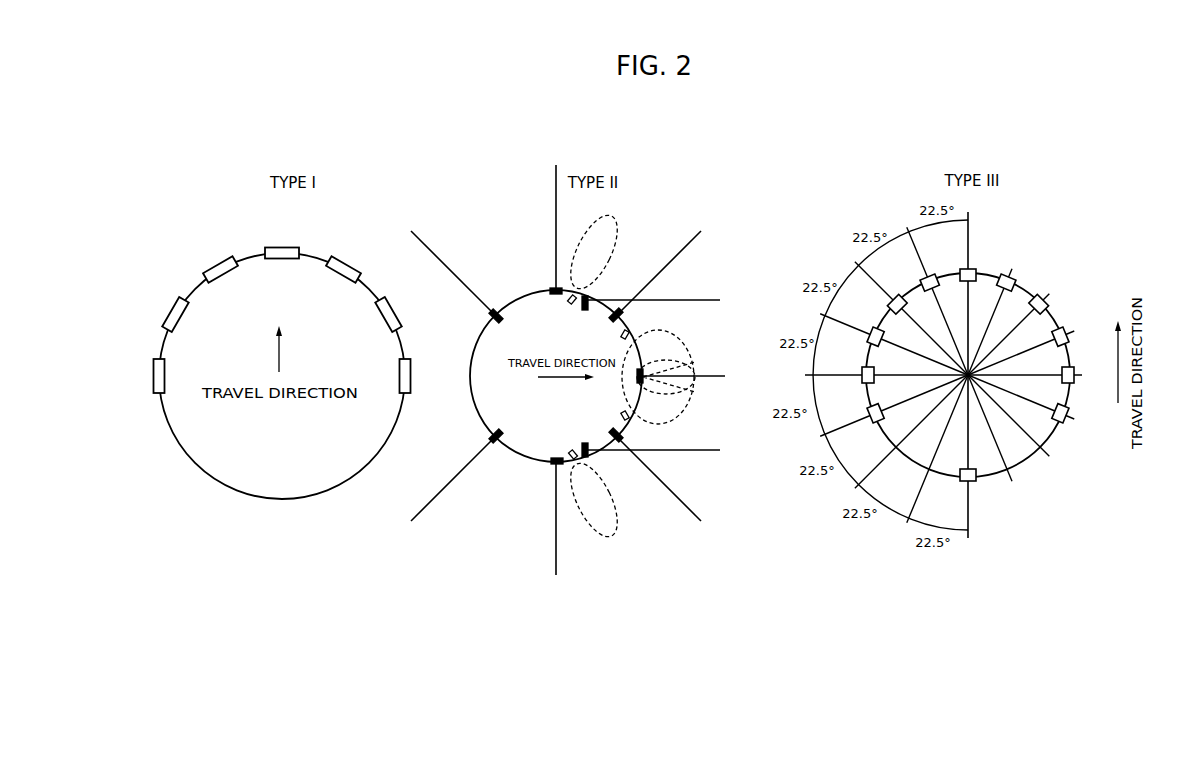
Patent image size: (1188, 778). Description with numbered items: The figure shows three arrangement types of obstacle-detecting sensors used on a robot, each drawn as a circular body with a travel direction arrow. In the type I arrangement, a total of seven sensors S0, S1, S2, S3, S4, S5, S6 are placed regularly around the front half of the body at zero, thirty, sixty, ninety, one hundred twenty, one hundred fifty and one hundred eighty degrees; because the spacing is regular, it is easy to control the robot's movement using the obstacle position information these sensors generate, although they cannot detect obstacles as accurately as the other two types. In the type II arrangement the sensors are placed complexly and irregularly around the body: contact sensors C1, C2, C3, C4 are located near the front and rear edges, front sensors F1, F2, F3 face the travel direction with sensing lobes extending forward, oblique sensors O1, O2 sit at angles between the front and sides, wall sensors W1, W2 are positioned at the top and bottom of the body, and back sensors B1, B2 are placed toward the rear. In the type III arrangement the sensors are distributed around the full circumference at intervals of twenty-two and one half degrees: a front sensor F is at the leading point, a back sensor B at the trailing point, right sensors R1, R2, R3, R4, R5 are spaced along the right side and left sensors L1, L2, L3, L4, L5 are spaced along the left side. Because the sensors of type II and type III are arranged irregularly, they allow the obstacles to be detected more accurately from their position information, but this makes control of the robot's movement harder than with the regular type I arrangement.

The sensor S0 (type I) S0 is at (392, 376).
The sensor S1 (type I) S1 is at (379, 318).
The sensor S2 (type I) S2 is at (342, 280).
The sensor S3 (type I) S3 is at (282, 270).
The sensor S4 (type I) S4 is at (221, 281).
The sensor S5 (type I) S5 is at (181, 321).
The sensor S6 (type I) S6 is at (170, 377).
The wall sensor W1 is at (552, 453).
The wall sensor W2 is at (551, 299).
The contact sensor C1 is at (571, 448).
The contact sensor C2 is at (624, 408).
The contact sensor C3 is at (625, 343).
The contact sensor C4 is at (571, 306).
The front sensor F1 is at (590, 443).
The front sensor F2 is at (632, 376).
The front sensor F3 is at (589, 308).
The oblique sensor O1 is at (611, 430).
The oblique sensor O2 is at (611, 319).
The back sensor B1 is at (504, 431).
The back sensor B2 is at (504, 321).
The front sensor F is at (972, 265).
The back sensor B is at (962, 486).
The right sensor R1 is at (1007, 270).
The right sensor R2 is at (1052, 298).
The right sensor R3 is at (1074, 332).
The right sensor R4 is at (1083, 375).
The right sensor R5 is at (1074, 414).
The left sensor L1 is at (933, 270).
The left sensor L2 is at (897, 292).
The left sensor L3 is at (870, 326).
The left sensor L4 is at (856, 369).
The left sensor L5 is at (862, 411).